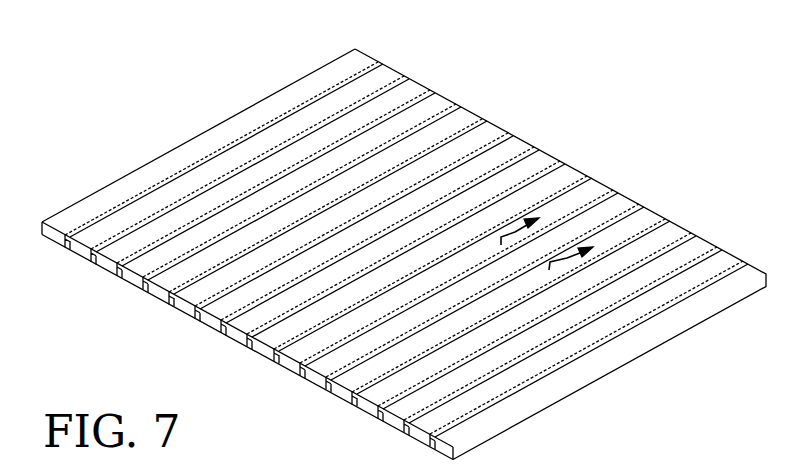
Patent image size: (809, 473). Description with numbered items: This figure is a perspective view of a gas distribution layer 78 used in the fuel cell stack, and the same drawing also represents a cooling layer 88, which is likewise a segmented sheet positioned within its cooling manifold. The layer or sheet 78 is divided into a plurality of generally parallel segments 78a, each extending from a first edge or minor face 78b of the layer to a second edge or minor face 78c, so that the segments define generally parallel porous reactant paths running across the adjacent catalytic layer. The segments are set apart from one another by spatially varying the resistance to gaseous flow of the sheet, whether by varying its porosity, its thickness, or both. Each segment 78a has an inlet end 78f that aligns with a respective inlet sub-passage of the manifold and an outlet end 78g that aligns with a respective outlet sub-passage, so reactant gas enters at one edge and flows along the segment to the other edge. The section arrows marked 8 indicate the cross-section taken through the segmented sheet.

The gas distribution layer 78 is at (394, 241).
The cooling layer 88 is at (617, 171).
The segment 78a is at (338, 68).
The first edge or minor face 78b is at (102, 267).
The second edge or minor face 78c is at (446, 93).
The outlet end 78g is at (526, 137).
The inlet end 78f is at (258, 348).
The section line 8- 8 is at (556, 235).